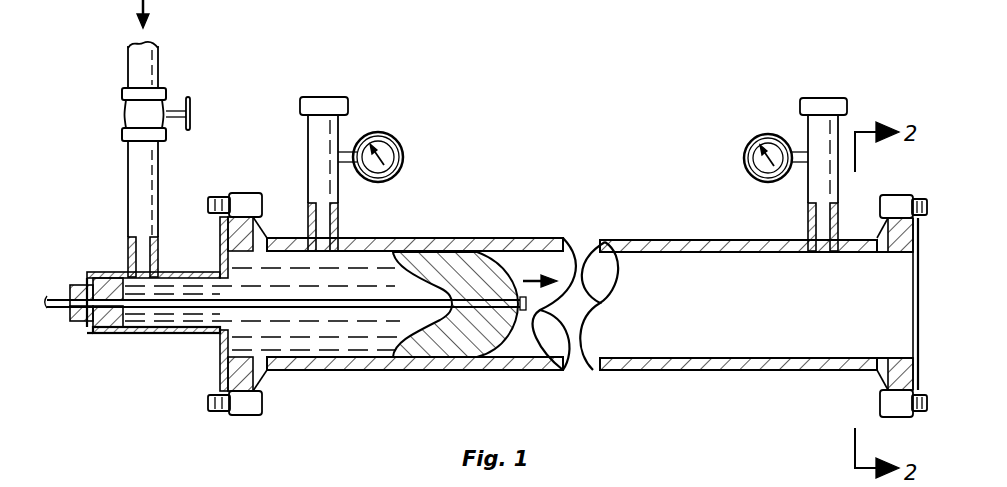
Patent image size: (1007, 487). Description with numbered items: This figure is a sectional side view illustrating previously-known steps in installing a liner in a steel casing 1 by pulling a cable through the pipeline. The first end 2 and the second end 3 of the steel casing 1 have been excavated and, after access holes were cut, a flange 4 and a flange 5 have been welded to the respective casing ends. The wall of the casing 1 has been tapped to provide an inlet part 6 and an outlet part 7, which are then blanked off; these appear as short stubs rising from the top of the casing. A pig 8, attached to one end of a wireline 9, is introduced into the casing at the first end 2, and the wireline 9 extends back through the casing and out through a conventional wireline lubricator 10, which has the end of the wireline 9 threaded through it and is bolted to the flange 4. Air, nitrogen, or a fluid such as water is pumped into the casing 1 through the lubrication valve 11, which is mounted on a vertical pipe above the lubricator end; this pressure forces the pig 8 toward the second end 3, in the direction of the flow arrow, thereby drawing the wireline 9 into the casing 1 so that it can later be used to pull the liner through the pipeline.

The steel casing 1 is at (460, 238).
The first end 2 is at (265, 378).
The second end 3 is at (880, 380).
The flange 4 is at (243, 193).
The flange 5 is at (904, 196).
The inlet part 6 is at (340, 221).
The outlet part 7 is at (808, 222).
The pig 8 is at (510, 338).
The wireline 9 is at (344, 305).
The wireline lubricator 10 is at (112, 318).
The lubrication valve 11 is at (125, 106).